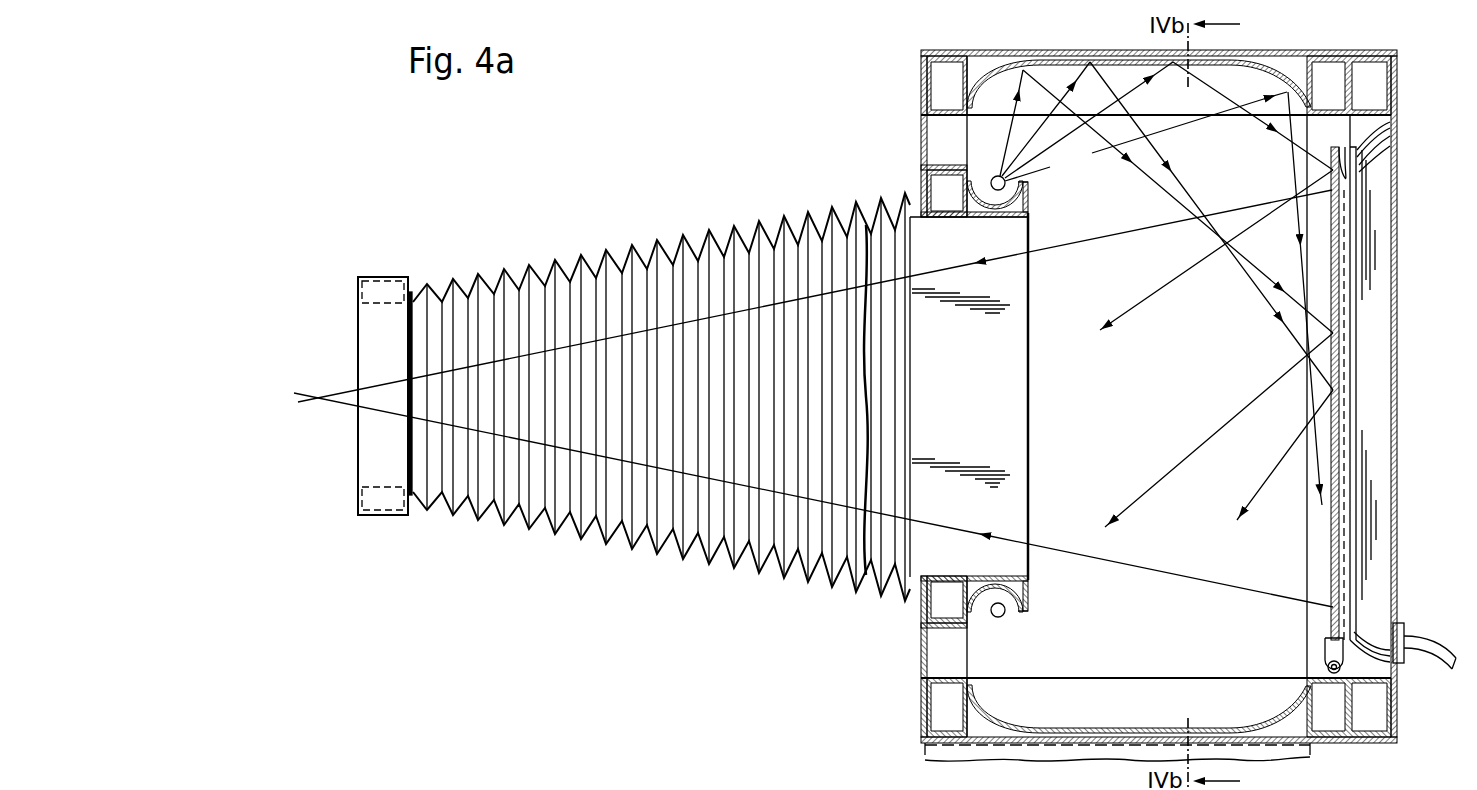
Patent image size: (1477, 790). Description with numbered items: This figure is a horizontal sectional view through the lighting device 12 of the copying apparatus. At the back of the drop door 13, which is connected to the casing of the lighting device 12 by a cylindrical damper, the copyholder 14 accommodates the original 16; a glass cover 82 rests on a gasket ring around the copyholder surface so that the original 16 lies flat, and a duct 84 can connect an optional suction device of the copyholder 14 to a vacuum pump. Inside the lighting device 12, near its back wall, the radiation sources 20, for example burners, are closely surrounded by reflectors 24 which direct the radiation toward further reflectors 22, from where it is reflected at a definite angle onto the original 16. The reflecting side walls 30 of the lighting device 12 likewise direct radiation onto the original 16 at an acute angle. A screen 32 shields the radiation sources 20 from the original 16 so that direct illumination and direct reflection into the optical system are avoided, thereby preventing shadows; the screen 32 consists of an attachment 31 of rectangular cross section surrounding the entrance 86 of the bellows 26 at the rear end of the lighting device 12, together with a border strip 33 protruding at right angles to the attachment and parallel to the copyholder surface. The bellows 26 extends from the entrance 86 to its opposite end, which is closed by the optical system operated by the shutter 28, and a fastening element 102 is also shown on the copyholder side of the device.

The lighting device 12 is at (1305, 52).
The drop door 13 is at (1401, 544).
The copyholder 14 is at (1330, 575).
The original 16 is at (1343, 368).
The radiation sources 20 is at (1006, 178).
The reflectors 22 is at (1110, 58).
The reflectors 24 is at (975, 182).
The bellows 26 is at (525, 268).
The shutter 28 is at (384, 313).
The side walls 30 is at (996, 58).
The attachment 31 is at (813, 334).
The screen 32 is at (1030, 460).
The border strip 33 is at (1035, 193).
The glass cover 82 is at (1330, 540).
The duct 84 is at (1430, 638).
The entrance 86 is at (926, 400).
The retaining hook 102 is at (1346, 176).